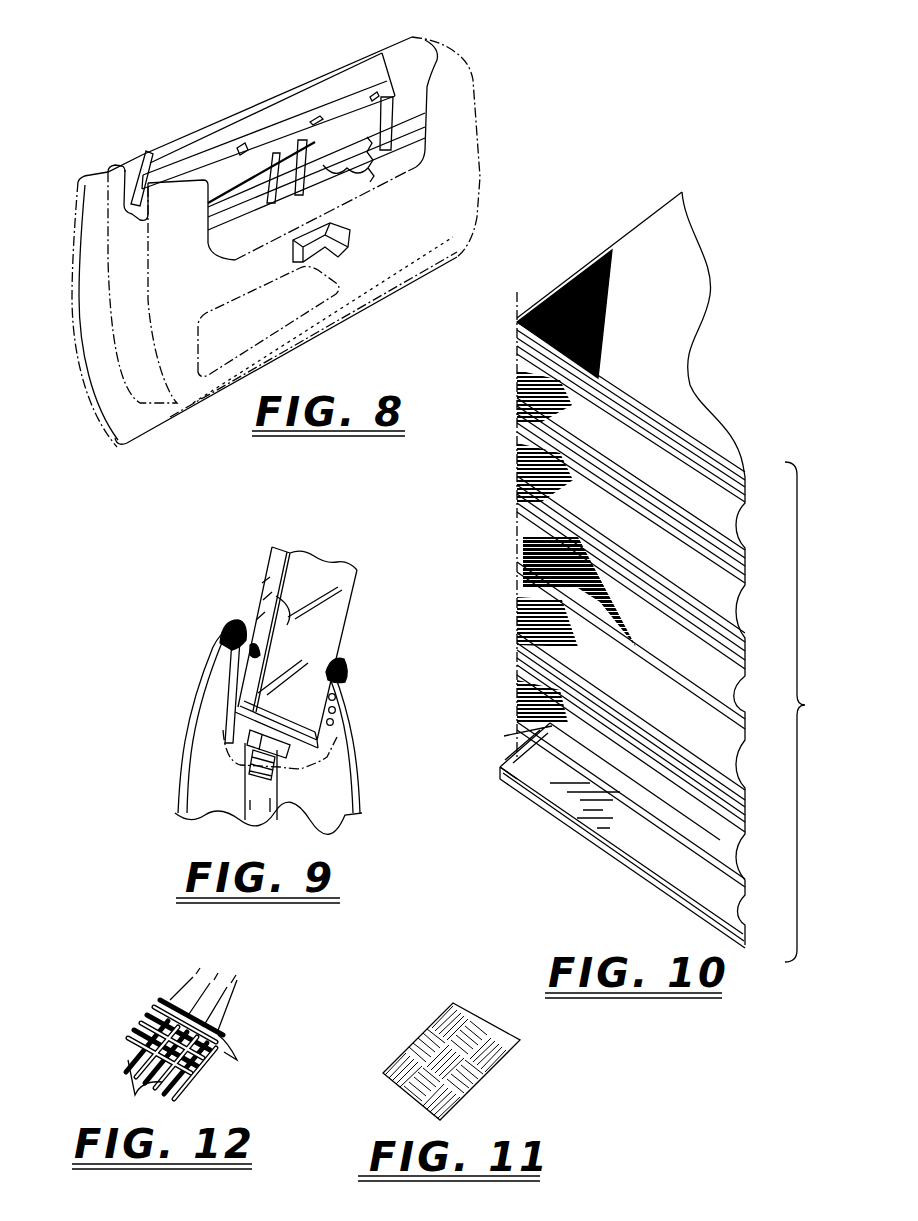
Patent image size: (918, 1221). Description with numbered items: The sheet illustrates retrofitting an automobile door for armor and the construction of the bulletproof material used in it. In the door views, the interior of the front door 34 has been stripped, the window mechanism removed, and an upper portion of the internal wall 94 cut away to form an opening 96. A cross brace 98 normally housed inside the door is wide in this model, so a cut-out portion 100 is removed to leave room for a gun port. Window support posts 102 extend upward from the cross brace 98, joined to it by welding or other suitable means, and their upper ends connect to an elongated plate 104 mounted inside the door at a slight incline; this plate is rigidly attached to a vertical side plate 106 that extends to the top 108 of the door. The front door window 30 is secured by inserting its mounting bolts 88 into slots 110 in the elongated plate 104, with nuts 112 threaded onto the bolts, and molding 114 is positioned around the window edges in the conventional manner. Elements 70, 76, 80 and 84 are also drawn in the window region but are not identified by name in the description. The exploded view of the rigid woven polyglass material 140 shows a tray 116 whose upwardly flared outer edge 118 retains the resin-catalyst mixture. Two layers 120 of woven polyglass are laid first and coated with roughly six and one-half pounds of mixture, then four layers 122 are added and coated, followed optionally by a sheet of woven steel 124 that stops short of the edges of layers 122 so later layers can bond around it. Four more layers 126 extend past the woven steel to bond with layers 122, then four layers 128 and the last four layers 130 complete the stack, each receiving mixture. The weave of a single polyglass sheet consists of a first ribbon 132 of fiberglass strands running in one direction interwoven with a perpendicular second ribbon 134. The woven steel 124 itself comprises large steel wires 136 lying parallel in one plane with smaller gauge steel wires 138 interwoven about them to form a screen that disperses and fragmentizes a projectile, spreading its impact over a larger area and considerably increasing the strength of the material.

In FIG. 9, the front door window 30 is at (346, 556).
In FIG. 8, the front door 34 is at (230, 93).
In FIG. 9, the front door 34 is at (178, 693).
In FIG. 9, the window glass pane 70 is at (330, 586).
In FIG. 9, the glass edge 76 is at (289, 623).
In FIG. 9, the side channel 80 is at (270, 575).
In FIG. 9, the bottom channel 84 is at (291, 726).
In FIG. 9, the mounting bolts 88 is at (255, 762).
In FIG. 8, the internal wall 94 is at (430, 225).
In FIG. 8, the opening 96 is at (427, 119).
In FIG. 8, the cross brace 98 is at (246, 238).
In FIG. 8, the cut-out portion 100 is at (345, 180).
In FIG. 8, the window support posts 102 is at (398, 99).
In FIG. 9, the window support posts 102 is at (250, 788).
In FIG. 8, the elongated plate 104 is at (187, 166).
In FIG. 9, the elongated plate 104 is at (333, 740).
In FIG. 8, the vertical side plate 106 is at (215, 138).
In FIG. 9, the vertical side plate 106 is at (213, 650).
In FIG. 8, the top 108 is at (275, 100).
In FIG. 8, the slots 110 is at (320, 115).
In FIG. 9, the nuts 112 is at (308, 758).
In FIG. 9, the molding 114 is at (234, 624).
In FIG. 10, the tray 116 is at (720, 892).
In FIG. 10, the upwardly flared outer edge 118 is at (524, 790).
In FIG. 10, the two layers of woven polyglass 120 is at (672, 815).
In FIG. 10, the four layers of woven polyglass 122 is at (750, 783).
In FIG. 10, the woven steel 124 is at (684, 653).
In FIG. 12, the woven steel 124 is at (125, 1012).
In FIG. 10, the four more layers of woven polyglass 126 is at (750, 638).
In FIG. 10, the four layers of woven polyglass 128 is at (750, 553).
In FIG. 10, the last four layers of woven polyglass 130 is at (750, 473).
In FIG. 11, the first ribbon 132 is at (393, 1090).
In FIG. 11, the second ribbon 134 is at (380, 1078).
In FIG. 12, the large steel wires 136 is at (138, 1088).
In FIG. 12, the smaller gauge steel wires 138 is at (236, 1060).
In FIG. 10, the woven polyglass material 140 is at (718, 360).